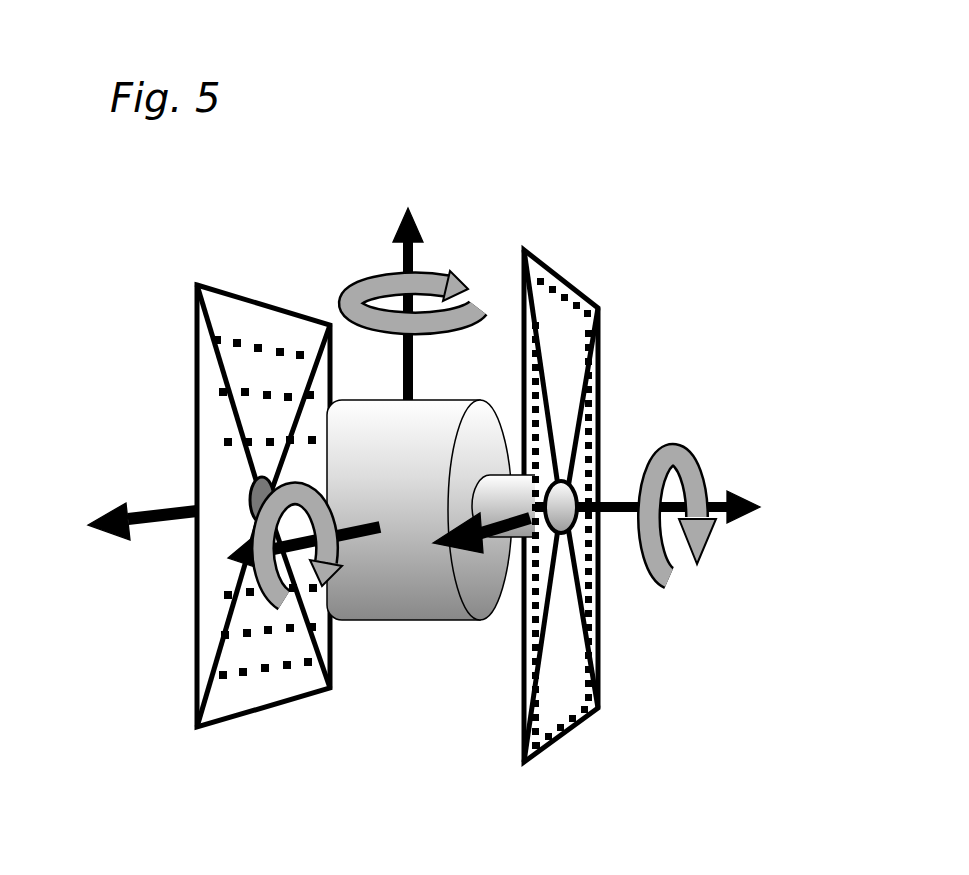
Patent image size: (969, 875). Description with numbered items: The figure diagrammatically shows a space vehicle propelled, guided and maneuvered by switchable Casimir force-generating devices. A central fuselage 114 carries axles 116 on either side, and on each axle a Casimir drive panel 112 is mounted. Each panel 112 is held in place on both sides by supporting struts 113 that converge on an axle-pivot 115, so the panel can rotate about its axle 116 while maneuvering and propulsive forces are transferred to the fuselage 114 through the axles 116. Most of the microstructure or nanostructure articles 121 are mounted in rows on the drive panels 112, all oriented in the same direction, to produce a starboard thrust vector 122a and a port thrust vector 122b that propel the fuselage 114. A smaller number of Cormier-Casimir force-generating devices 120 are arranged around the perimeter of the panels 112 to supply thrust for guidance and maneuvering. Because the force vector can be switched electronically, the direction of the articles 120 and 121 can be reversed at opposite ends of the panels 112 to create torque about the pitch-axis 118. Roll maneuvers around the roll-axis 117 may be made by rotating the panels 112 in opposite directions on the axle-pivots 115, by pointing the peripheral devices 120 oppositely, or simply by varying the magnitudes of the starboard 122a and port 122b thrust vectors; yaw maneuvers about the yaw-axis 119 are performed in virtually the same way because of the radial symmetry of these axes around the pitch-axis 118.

The Casimir drive panels 112 is at (570, 675).
The supporting struts 113 is at (318, 347).
The fuselage 114 is at (378, 588).
The axle-pivots 115 is at (577, 487).
The axles 116 is at (500, 493).
The roll-axis 117 is at (233, 563).
The pitch-axis 118 is at (777, 487).
The yaw-axis 119 is at (415, 232).
The Cormier-Casimir force-generating devices 120 is at (588, 378).
The microstructure or nanostructure articles 121 is at (245, 345).
The starboard thrust vector 122a is at (112, 503).
The port thrust vector 122b is at (447, 548).